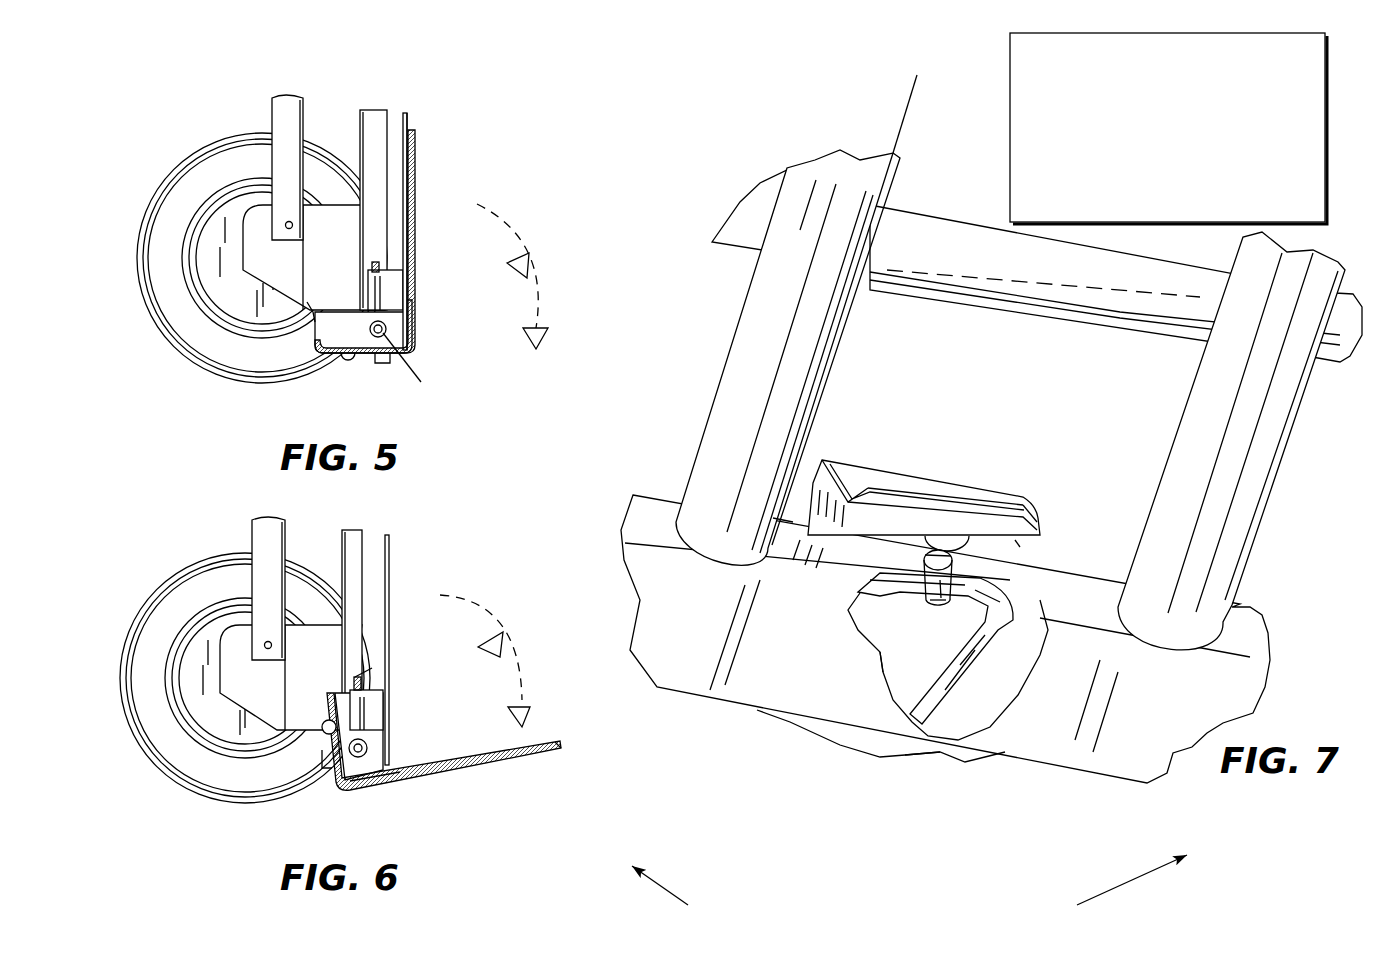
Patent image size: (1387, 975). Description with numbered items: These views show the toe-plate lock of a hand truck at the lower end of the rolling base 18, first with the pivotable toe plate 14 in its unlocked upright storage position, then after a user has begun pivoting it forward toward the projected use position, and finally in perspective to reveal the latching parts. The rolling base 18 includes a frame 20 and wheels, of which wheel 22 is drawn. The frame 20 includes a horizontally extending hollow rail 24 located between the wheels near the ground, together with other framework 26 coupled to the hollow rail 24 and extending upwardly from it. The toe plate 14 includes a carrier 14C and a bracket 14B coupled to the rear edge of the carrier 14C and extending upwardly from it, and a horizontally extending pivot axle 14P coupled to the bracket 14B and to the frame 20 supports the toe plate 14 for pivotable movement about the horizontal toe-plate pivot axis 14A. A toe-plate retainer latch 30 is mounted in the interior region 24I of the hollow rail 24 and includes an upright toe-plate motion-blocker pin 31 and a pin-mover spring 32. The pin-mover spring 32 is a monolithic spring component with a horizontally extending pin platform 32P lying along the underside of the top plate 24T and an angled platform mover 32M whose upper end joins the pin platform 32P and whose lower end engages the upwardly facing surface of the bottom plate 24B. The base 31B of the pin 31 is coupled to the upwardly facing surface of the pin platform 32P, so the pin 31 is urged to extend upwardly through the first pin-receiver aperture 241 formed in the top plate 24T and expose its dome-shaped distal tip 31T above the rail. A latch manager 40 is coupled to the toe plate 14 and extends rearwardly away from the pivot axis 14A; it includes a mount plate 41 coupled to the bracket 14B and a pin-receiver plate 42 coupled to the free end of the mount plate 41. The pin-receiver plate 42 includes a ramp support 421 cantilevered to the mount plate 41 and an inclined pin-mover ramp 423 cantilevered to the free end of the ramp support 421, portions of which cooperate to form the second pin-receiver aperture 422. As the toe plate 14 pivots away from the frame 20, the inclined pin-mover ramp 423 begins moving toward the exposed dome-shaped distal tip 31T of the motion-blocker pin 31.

In FIG. 5, the pivotable toe plate 14 is at (418, 163).
In FIG. 6, the pivotable toe plate 14 is at (457, 780).
In FIG. 5, the horizontal toe-plate pivot axis 14A is at (611, 312).
In FIG. 6, the horizontal toe-plate pivot axis 14A is at (378, 760).
In FIG. 6, the bracket 14B is at (335, 778).
In FIG. 6, the carrier 14C is at (558, 742).
In FIG. 5, the pivot axle 14P is at (377, 337).
In FIG. 6, the pivot axle 14P is at (350, 770).
In FIG. 5, the rolling base 18 is at (297, 98).
In FIG. 6, the rolling base 18 is at (262, 516).
In FIG. 7, the rolling base 18 is at (810, 148).
In FIG. 5, the frame 20 is at (372, 110).
In FIG. 6, the frame 20 is at (357, 528).
In FIG. 7, the frame 20 is at (696, 397).
In FIG. 5, the wheel 22 is at (182, 152).
In FIG. 6, the wheel 22 is at (163, 574).
In FIG. 5, the hollow rail 24 is at (419, 294).
In FIG. 6, the hollow rail 24 is at (380, 678).
In FIG. 7, the hollow rail 24 is at (1352, 465).
In FIG. 7, the top plate 24T is at (793, 520).
In FIG. 7, the interior region 24I is at (902, 645).
In FIG. 7, the bottom plate 24B is at (912, 750).
In FIG. 7, the first pin-receiver aperture 241 is at (935, 555).
In FIG. 5, the framework 26 is at (405, 112).
In FIG. 6, the framework 26 is at (397, 590).
In FIG. 7, the framework 26 is at (724, 276).
In FIG. 5, the toe-plate retainer latch 30 is at (398, 291).
In FIG. 6, the toe-plate retainer latch 30 is at (377, 716).
In FIG. 7, the toe-plate retainer latch 30 is at (1079, 891).
In FIG. 5, the toe-plate motion-blocker pin 31 is at (400, 258).
In FIG. 7, the toe-plate motion-blocker pin 31 is at (910, 582).
In FIG. 7, the dome-shaped distal tip 31T is at (1017, 543).
In FIG. 7, the base 31B is at (937, 600).
In FIG. 7, the pin-mover spring 32 is at (1324, 811).
In FIG. 7, the pin platform 32P is at (987, 602).
In FIG. 7, the angled platform mover 32M is at (1020, 682).
In FIG. 5, the latch manager 40 is at (312, 337).
In FIG. 6, the latch manager 40 is at (327, 680).
In FIG. 7, the latch manager 40 is at (1010, 70).
In FIG. 7, the mount plate 41 is at (1267, 65).
In FIG. 7, the pin-receiver plate 42 is at (1338, 62).
In FIG. 7, the ramp support 421 is at (918, 478).
In FIG. 7, the second pin-receiver aperture 422 is at (970, 520).
In FIG. 7, the inclined pin-mover ramp 423 is at (1292, 175).